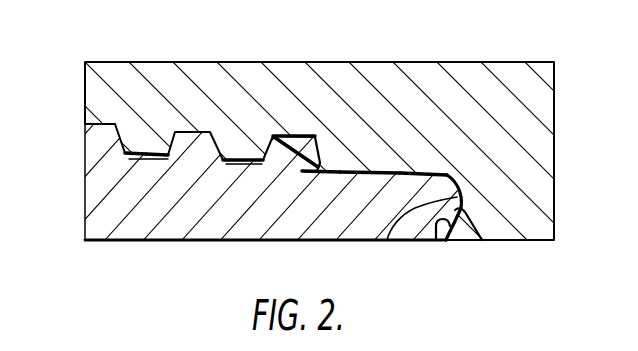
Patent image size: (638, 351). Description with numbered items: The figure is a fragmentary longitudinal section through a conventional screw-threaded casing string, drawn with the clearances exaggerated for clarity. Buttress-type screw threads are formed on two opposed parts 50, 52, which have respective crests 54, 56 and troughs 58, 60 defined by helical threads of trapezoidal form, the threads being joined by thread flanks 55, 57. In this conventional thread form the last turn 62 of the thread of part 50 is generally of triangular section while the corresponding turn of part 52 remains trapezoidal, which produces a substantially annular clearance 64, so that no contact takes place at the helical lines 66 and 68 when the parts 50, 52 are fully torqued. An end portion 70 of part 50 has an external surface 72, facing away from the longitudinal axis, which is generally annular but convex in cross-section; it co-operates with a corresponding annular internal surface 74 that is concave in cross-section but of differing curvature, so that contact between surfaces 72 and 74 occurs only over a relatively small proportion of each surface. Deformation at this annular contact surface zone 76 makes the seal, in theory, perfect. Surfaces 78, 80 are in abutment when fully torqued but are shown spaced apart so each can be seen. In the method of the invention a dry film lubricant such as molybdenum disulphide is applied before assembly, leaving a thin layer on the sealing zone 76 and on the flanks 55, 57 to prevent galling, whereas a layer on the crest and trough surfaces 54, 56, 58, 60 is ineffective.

The part 50 is at (110, 210).
The part 52 is at (95, 90).
The crest 54 is at (113, 126).
The thread flank 55 is at (125, 153).
The crest 56 is at (148, 152).
The thread flank 57 is at (121, 142).
The trough 58 is at (148, 159).
The trough 60 is at (202, 131).
The last turn 62 is at (277, 138).
The annular clearance 64 is at (300, 150).
The helical line 66 is at (303, 173).
The helical line 68 is at (320, 164).
The end portion 70 is at (387, 240).
The external surface 72 is at (458, 181).
The annular internal surface 74 is at (430, 173).
The annular contact surface zone 76 is at (377, 172).
The surface 78 is at (432, 241).
The surface 80 is at (482, 240).